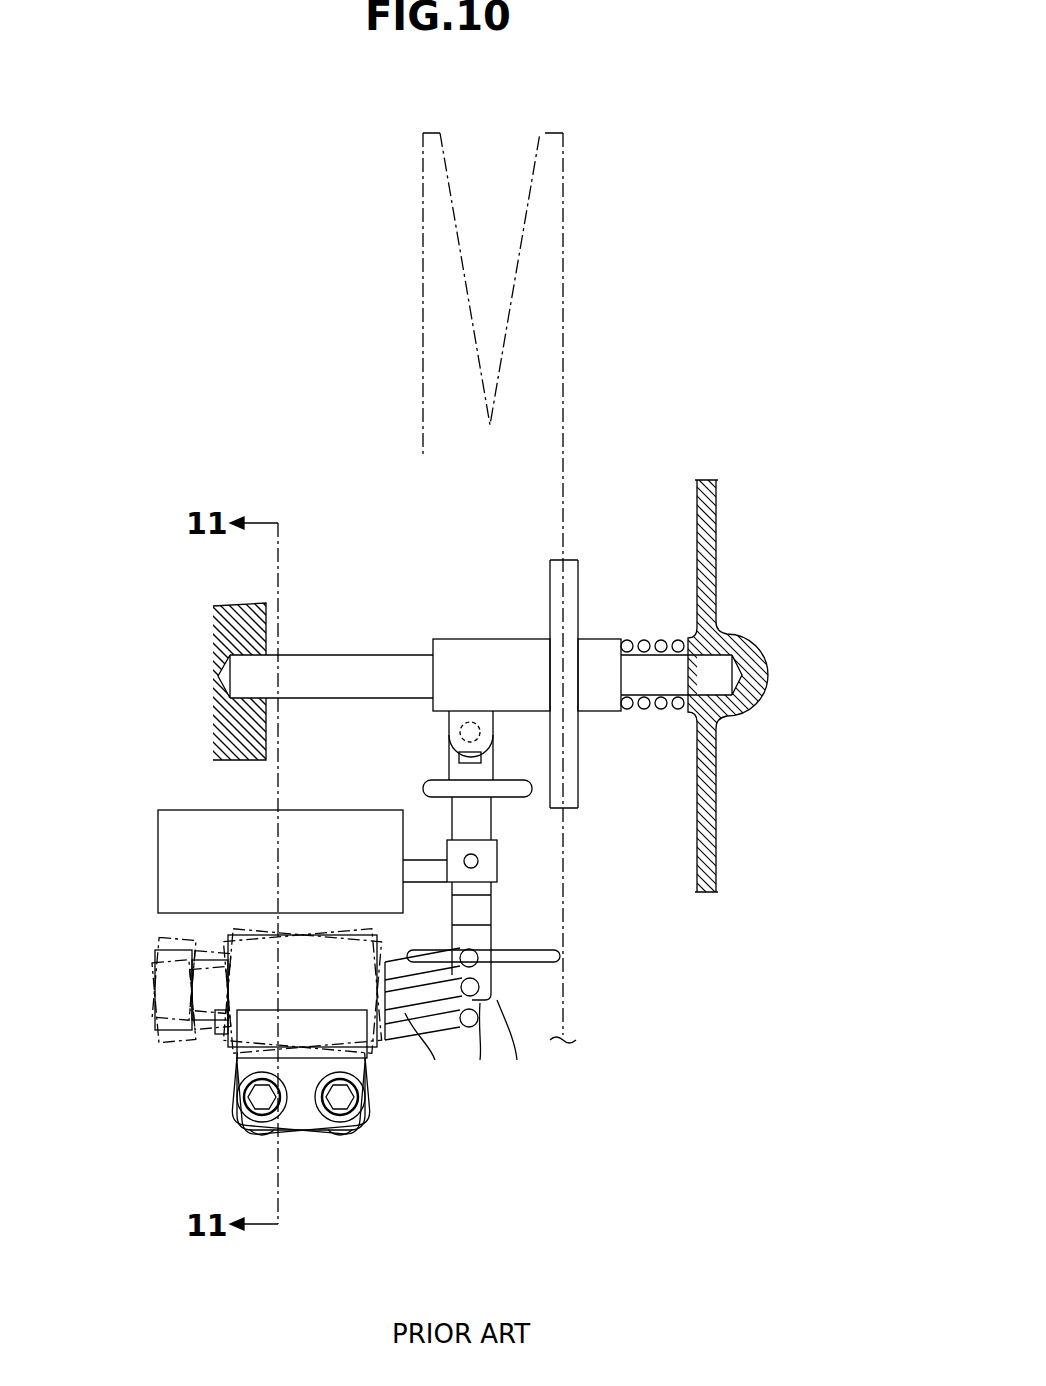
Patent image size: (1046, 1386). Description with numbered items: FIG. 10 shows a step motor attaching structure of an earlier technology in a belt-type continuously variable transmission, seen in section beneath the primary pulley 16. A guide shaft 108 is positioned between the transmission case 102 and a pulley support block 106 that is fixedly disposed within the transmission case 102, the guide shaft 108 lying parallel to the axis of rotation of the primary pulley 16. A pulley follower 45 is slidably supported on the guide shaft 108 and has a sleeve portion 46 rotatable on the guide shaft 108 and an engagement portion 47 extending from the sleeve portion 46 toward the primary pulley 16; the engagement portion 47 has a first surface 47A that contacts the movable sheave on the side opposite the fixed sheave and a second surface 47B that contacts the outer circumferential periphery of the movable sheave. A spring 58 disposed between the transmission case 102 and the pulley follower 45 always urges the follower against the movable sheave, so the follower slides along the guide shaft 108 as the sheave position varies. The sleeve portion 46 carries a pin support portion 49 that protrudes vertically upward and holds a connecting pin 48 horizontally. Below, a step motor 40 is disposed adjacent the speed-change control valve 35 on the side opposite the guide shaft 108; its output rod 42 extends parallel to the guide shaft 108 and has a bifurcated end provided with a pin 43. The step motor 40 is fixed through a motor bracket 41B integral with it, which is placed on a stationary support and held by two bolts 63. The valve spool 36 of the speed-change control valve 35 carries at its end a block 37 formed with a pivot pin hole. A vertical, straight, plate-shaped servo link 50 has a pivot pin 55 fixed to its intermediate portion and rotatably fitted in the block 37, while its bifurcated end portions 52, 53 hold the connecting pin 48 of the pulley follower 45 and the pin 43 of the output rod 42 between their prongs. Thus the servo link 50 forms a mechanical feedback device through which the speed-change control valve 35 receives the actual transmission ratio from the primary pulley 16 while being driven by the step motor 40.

The primary pulley 16 is at (522, 227).
The speed-change control valve 35 is at (178, 810).
The valve spool 36 is at (430, 882).
The block 37 is at (447, 850).
The step motor 40 is at (245, 962).
The motor bracket 41B is at (245, 1040).
The output rod 42 is at (405, 1013).
The pin 43 is at (480, 1002).
The pulley follower 45 is at (478, 639).
The sleeve portion 46 is at (438, 638).
The engagement portion 47 is at (553, 590).
The first surface 47A is at (578, 800).
The second surface 47B is at (548, 612).
The connecting pin 48 is at (462, 733).
The pin support portion 49 is at (466, 758).
The servo link 50 is at (493, 940).
The bifurcated end portion 52 is at (455, 773).
The bifurcated end portion 53 is at (492, 1003).
The pivot pin 55 is at (478, 861).
The spring 58 is at (630, 640).
The bolts 63 is at (260, 1098).
The transmission case 102 is at (716, 855).
The pulley support block 106 is at (222, 634).
The guide shaft 108 is at (355, 672).